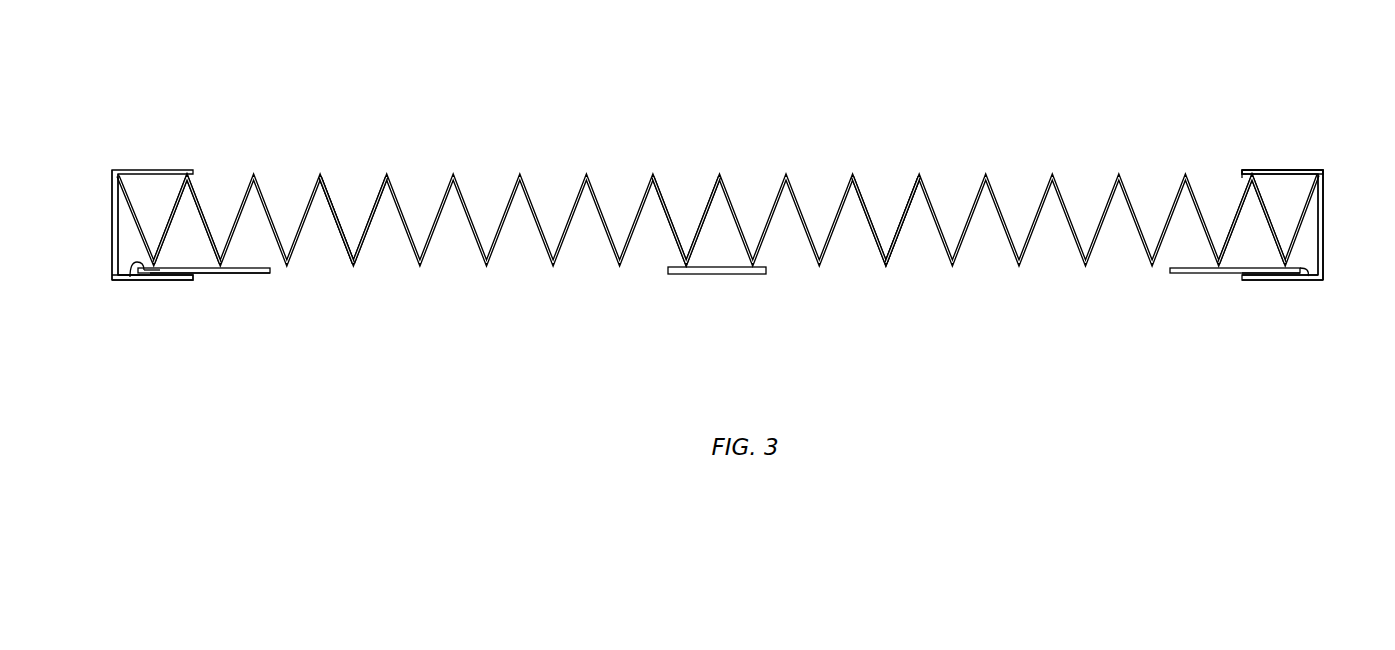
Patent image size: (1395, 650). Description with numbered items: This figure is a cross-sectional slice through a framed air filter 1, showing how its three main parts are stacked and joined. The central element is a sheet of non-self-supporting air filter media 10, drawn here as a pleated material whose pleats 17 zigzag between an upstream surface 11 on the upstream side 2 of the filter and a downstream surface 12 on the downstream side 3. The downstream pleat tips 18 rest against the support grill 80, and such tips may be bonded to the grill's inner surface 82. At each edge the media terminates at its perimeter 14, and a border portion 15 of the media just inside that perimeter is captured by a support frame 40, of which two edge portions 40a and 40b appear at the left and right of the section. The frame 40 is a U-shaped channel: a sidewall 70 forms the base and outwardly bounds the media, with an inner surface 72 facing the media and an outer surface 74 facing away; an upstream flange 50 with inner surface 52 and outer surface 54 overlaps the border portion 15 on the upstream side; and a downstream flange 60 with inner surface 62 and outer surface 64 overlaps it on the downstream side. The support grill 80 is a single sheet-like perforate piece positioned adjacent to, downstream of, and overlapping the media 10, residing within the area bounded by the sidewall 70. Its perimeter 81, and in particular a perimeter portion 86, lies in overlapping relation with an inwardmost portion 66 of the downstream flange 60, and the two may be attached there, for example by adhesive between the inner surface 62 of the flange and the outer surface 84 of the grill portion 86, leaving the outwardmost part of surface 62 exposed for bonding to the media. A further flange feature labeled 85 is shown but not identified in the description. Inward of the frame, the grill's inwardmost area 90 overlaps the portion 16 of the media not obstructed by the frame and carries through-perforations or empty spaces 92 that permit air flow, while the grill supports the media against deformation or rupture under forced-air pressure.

The framed air filter 1 is at (133, 40).
The upstream side 2 is at (672, 70).
The downstream side 3 is at (1003, 382).
The non-self-supporting air filter media 10 is at (327, 195).
The upstream surface 11 is at (379, 195).
The downstream surface 12 is at (340, 228).
The perimeter 14 is at (140, 233).
The border portion 15 is at (177, 198).
The portion of air filter media 16 is at (885, 263).
The pleats 17 is at (903, 225).
The downstream pleat tips 18 is at (690, 263).
The support frame 40 is at (1318, 170).
The frame portion 40a is at (112, 170).
The frame portion 40b is at (1315, 280).
The upstream flange 50 is at (1292, 170).
The inner surface of upstream flange 52 is at (1242, 180).
The outer surface of upstream flange 54 is at (1263, 170).
The downstream flange 60 is at (120, 280).
The inner surface of downstream flange 62 is at (143, 275).
The outer surface of downstream flange 64 is at (132, 280).
The portion of downstream flange 66 is at (157, 270).
The sidewall 70 is at (112, 193).
The inner surface of sidewall 72 is at (1308, 248).
The outer surface of sidewall 74 is at (1323, 195).
The support grill 80 is at (747, 274).
The perimeter of support grill 81 is at (1303, 280).
The inner surface of support grill 82 is at (250, 268).
The outer surface of support grill portion 84 is at (253, 275).
The flange portion 85 is at (173, 277).
The portion of support grill perimeter 86 is at (1245, 277).
The inwardmost area of support grill 90 is at (534, 300).
The through-perforations 92 is at (385, 272).